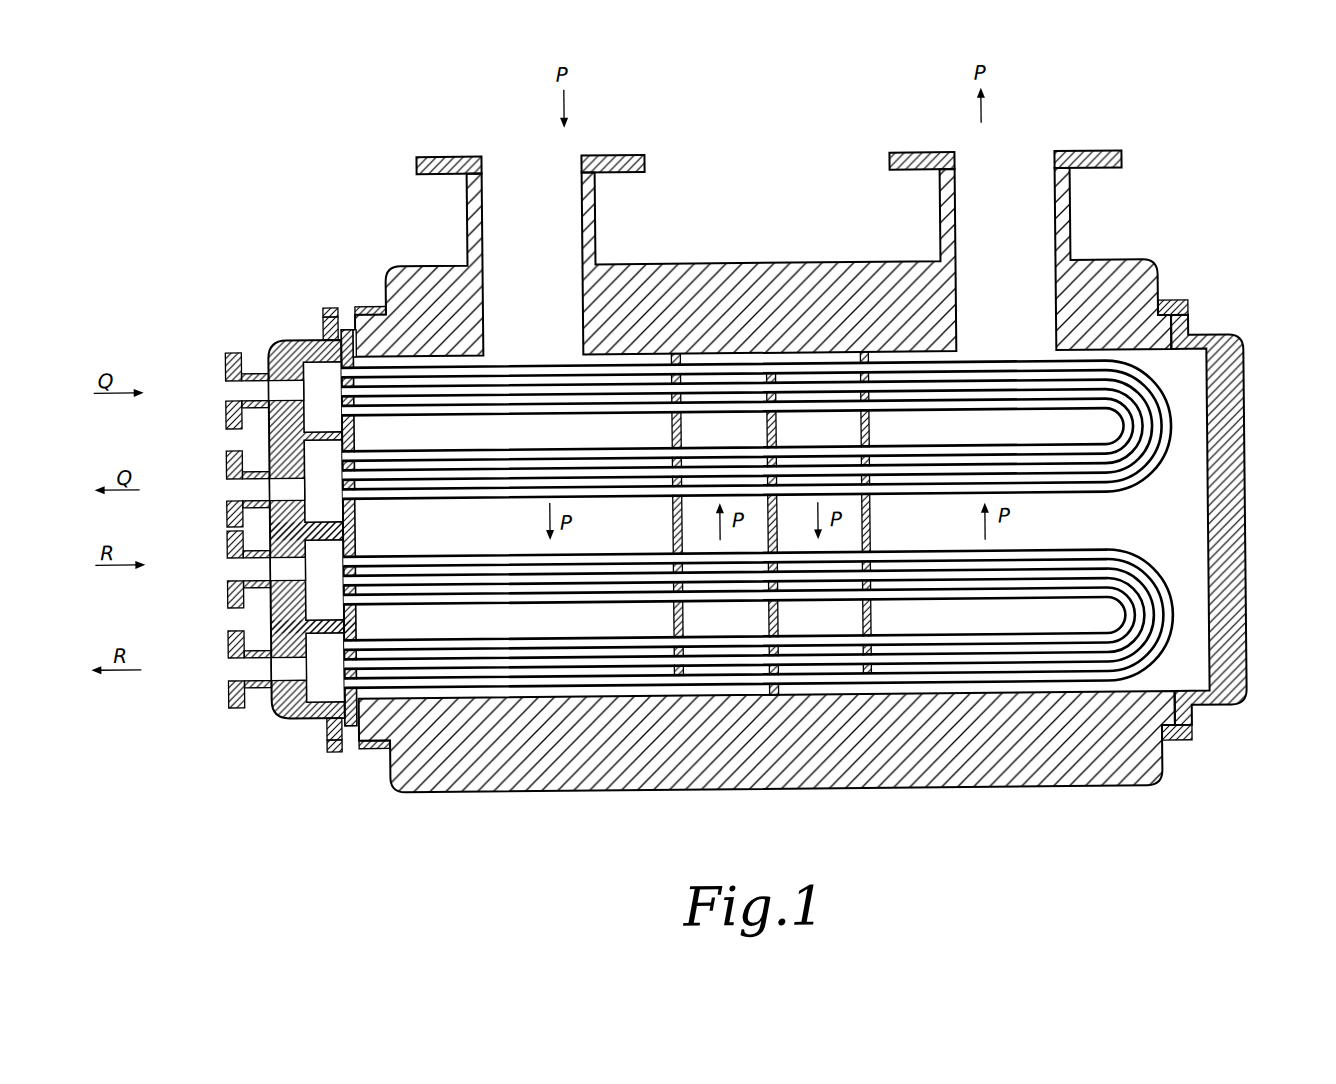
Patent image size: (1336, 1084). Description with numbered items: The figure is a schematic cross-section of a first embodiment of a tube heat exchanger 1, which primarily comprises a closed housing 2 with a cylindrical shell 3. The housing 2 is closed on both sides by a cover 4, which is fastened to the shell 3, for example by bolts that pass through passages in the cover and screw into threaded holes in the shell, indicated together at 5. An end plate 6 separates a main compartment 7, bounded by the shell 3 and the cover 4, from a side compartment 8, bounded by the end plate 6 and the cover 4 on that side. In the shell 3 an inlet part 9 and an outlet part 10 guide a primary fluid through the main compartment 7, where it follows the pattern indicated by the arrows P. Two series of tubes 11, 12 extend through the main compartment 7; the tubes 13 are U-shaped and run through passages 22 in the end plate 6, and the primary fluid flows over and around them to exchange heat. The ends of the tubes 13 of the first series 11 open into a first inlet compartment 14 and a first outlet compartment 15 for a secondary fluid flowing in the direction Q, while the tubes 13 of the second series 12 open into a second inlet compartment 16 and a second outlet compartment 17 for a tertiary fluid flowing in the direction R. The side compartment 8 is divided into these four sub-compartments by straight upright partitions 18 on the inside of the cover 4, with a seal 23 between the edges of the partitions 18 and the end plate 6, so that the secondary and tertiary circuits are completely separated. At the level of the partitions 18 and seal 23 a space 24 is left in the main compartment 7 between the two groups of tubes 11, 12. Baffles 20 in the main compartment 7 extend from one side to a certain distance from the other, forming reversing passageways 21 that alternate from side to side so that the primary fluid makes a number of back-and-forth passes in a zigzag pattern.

The tube heat exchanger 1 is at (1278, 190).
The housing 2 is at (1163, 224).
The shell 3 is at (702, 297).
The cover 4 is at (282, 357).
The threaded holes and passages 5 is at (331, 304).
The end plate 6 is at (349, 326).
The main compartment 7 is at (487, 527).
The side compartment 8 is at (312, 495).
The inlet part 9 is at (506, 186).
The outlet part 10 is at (1033, 205).
The first series of tubes 11 is at (1182, 418).
The second series of tubes 12 is at (1182, 588).
The tubes 13 is at (958, 411).
The first inlet compartment 14 is at (336, 396).
The first outlet compartment 15 is at (336, 493).
The second inlet compartment 16 is at (336, 577).
The second outlet compartment 17 is at (336, 667).
The partitions 18 is at (306, 544).
The baffles 20 is at (682, 533).
The reversing passageways 21 is at (772, 360).
The passages 22 is at (240, 565).
The seal 23 is at (340, 618).
The space 24 is at (1090, 536).